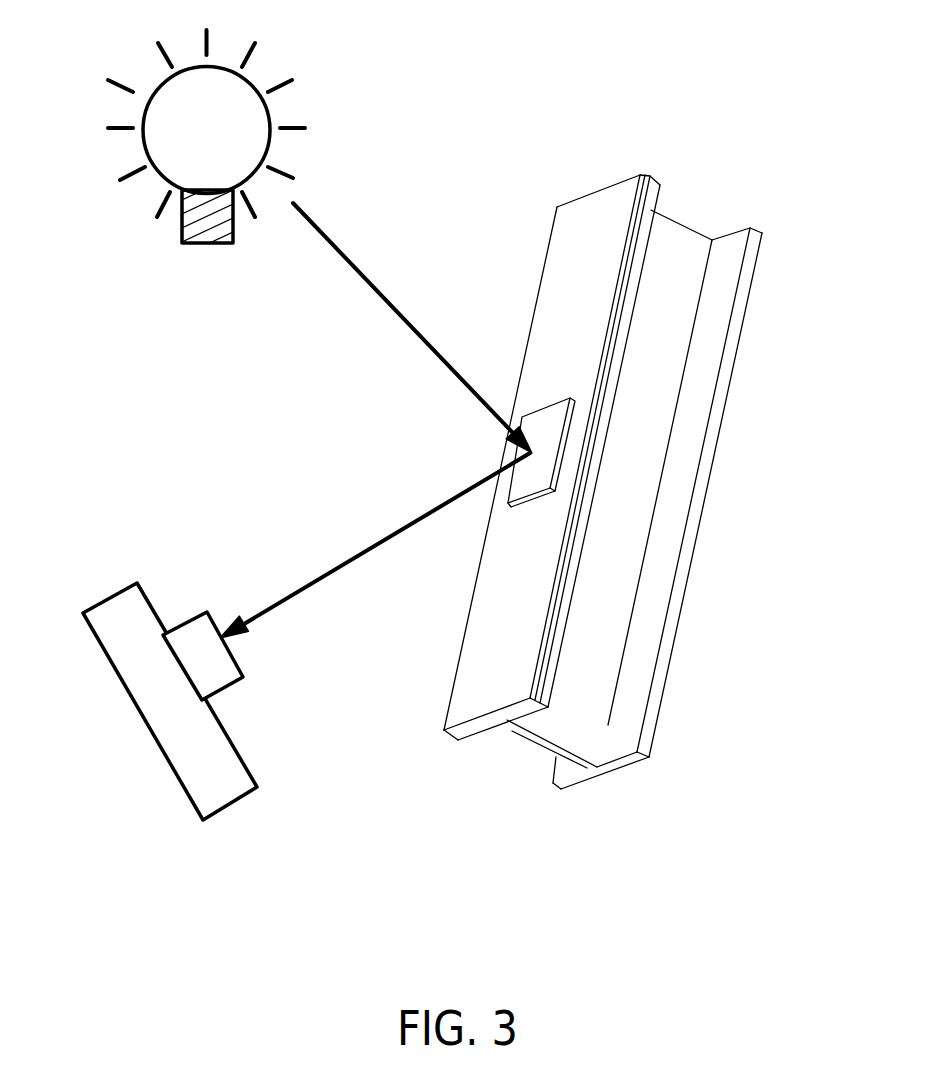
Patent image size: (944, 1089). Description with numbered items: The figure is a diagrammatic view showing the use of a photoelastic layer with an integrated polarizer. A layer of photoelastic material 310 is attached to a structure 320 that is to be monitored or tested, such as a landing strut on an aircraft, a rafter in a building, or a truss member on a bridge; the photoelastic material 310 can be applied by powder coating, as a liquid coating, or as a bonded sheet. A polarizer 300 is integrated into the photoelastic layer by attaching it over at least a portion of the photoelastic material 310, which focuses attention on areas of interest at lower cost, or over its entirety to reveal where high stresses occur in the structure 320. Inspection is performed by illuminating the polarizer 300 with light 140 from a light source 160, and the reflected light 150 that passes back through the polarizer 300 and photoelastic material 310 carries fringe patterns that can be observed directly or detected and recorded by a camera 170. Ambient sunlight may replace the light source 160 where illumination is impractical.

The light 140 is at (367, 280).
The reflected light beam 150 is at (347, 568).
The light source 160 is at (270, 118).
The camera 170 is at (195, 617).
The polarizer 300 is at (543, 403).
The photoelastic material 310 is at (568, 353).
The structure 320 is at (717, 440).